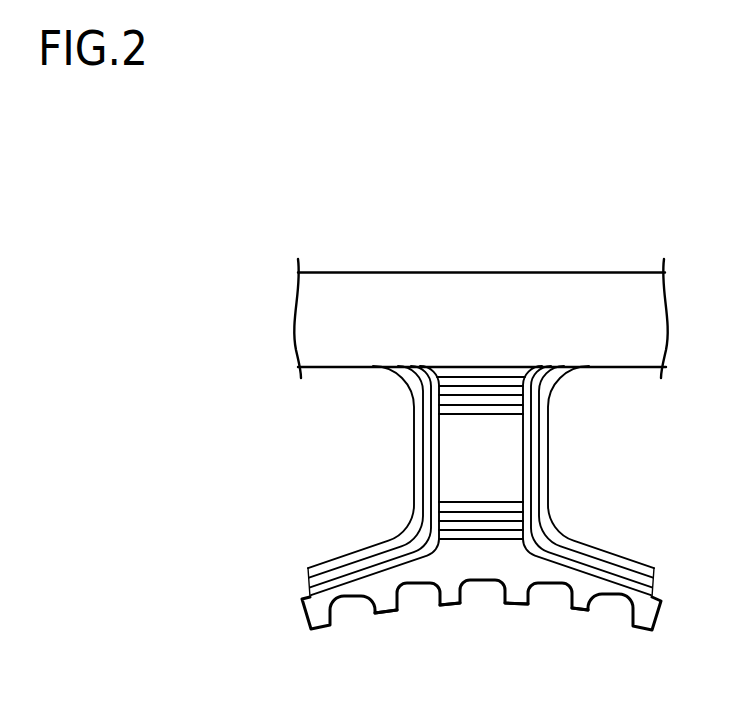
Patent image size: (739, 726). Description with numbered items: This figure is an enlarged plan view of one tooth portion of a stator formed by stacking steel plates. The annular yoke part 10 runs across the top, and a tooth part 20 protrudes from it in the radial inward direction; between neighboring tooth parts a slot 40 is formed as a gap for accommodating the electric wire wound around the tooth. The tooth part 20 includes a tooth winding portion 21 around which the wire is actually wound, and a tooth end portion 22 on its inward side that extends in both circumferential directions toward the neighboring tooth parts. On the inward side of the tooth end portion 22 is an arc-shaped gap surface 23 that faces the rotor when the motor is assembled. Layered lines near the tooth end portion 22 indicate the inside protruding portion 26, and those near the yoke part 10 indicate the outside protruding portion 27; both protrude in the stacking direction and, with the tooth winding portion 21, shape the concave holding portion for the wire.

The yoke part 10 is at (390, 284).
The slot 40 is at (331, 393).
The tooth part 20 is at (396, 465).
The core portion 21 is at (513, 462).
The tooth end portion 22 is at (482, 560).
The gap surface 23 is at (453, 606).
The inside protruding portion 26 is at (520, 548).
The outside protruding portion 27 is at (530, 347).